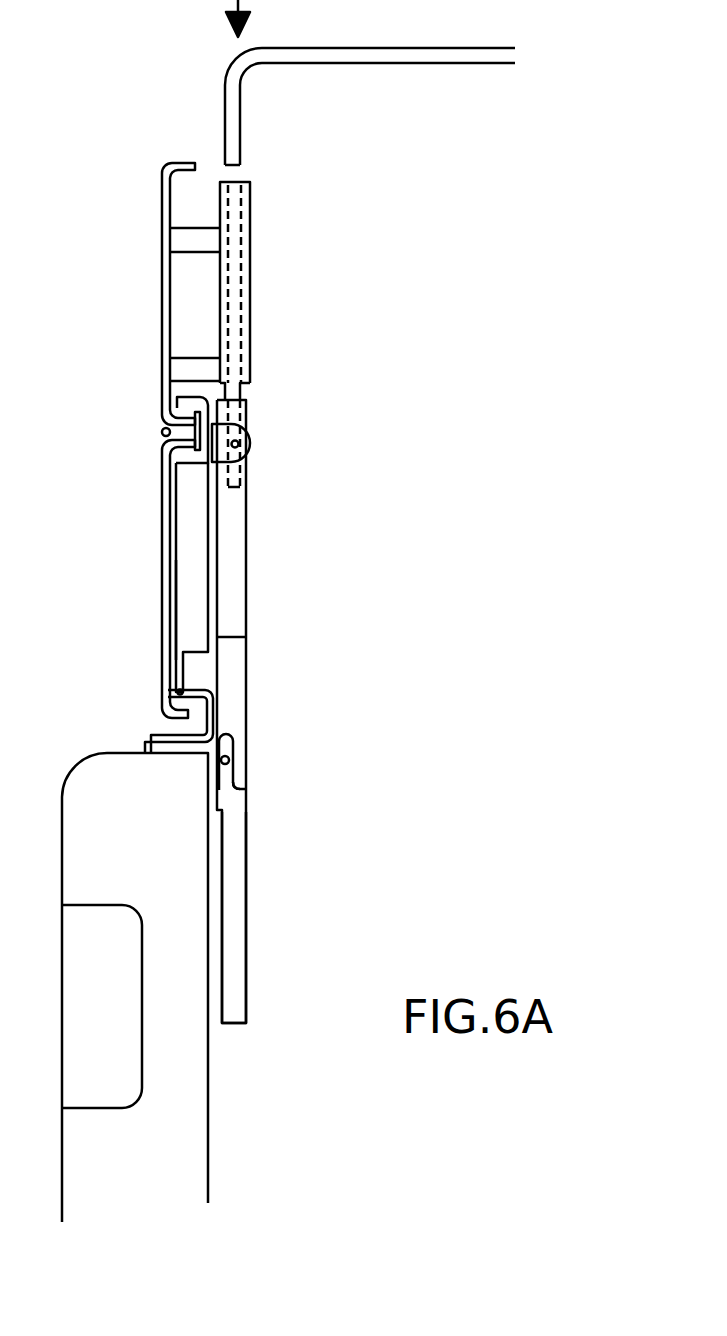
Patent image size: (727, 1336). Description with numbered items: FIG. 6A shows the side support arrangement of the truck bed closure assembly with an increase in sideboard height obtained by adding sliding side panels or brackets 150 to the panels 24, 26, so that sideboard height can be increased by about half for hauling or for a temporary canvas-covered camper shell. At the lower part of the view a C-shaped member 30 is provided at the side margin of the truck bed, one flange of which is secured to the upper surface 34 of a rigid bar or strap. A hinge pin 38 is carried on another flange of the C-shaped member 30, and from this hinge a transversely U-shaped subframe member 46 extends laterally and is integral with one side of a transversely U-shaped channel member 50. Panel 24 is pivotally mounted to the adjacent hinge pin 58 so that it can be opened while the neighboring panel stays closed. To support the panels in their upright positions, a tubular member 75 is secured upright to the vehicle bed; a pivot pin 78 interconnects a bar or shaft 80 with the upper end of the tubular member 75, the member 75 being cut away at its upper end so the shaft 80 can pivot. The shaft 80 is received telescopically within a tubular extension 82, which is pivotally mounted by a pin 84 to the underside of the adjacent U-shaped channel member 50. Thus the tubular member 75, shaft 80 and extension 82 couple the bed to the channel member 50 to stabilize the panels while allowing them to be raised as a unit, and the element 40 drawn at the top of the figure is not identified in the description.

The tubular frame member 40 is at (432, 57).
The sliding side panel or bracket 150 is at (258, 270).
The transversely U-shaped channel member 50 is at (186, 397).
The pin 84 is at (240, 445).
The hinge pin 58 is at (162, 432).
The tubular extension 82 is at (247, 546).
The panel 24 is at (176, 562).
The panel 26 is at (160, 572).
The transversely U-shaped subframe member 46 is at (187, 620).
The hinge pin 38 is at (177, 691).
The upper surface 34 is at (106, 751).
The C-shaped member 30 is at (170, 752).
The pivot pin 78 is at (230, 760).
The bar or shaft 80 is at (237, 798).
The tubular member 75 is at (247, 892).